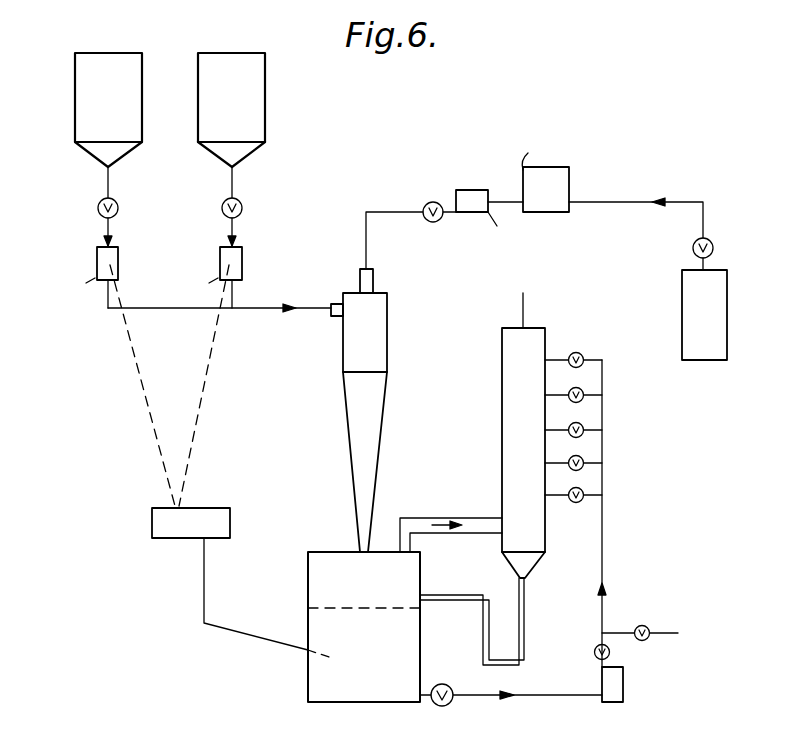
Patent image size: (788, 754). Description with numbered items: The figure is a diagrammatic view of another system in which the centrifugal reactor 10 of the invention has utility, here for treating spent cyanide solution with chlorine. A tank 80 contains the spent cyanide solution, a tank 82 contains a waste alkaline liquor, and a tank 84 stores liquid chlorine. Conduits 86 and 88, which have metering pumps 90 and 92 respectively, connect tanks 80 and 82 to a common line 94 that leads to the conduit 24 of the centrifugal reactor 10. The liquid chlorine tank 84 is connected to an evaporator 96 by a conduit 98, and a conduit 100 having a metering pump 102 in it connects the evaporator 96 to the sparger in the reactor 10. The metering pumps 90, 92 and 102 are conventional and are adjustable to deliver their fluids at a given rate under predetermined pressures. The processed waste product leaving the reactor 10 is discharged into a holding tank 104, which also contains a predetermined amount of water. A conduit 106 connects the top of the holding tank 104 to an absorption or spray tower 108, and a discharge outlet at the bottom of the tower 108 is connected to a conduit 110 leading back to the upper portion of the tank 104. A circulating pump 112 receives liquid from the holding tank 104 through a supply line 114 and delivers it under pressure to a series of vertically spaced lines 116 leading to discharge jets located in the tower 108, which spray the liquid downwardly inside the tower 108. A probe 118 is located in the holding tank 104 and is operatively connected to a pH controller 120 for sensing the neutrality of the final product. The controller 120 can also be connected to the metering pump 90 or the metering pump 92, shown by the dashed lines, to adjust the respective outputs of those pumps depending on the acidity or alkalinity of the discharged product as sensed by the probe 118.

The centrifugal reactor 10 is at (390, 337).
The conduit 24 is at (333, 304).
The tank 80 is at (258, 83).
The tank 82 is at (133, 87).
The tank 84 is at (720, 290).
The conduit 86 is at (233, 183).
The conduit 88 is at (109, 183).
The metering pump 90 is at (242, 265).
The metering pump 92 is at (118, 268).
The common line 94 is at (263, 308).
The evaporator 96 is at (569, 182).
The conduit 98 is at (683, 202).
The conduit 100 is at (447, 217).
The metering pump 102 is at (456, 195).
The holding tank 104 is at (308, 572).
The conduit 106 is at (465, 518).
The absorption or spray tower 108 is at (545, 525).
The conduit 110 is at (524, 612).
The circulating pump 112 is at (615, 700).
The supply line 114 is at (548, 697).
The vertically spaced lines 116 is at (593, 426).
The probe 118 is at (268, 640).
The pH controller 120 is at (210, 508).